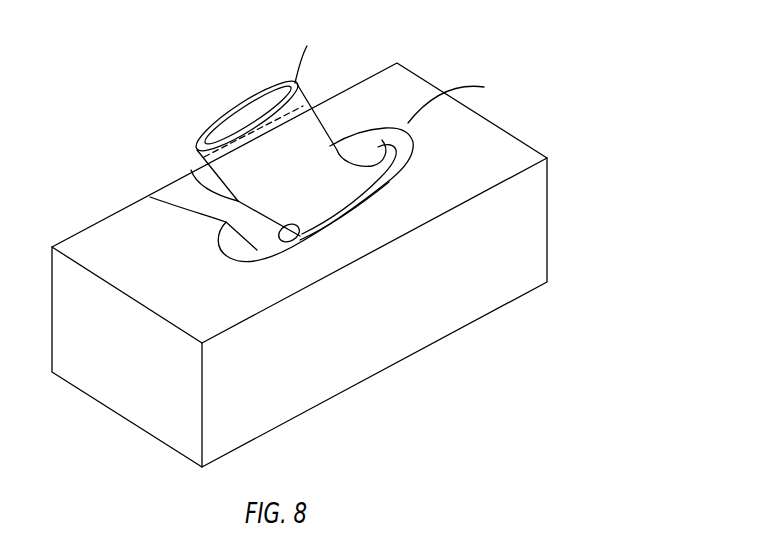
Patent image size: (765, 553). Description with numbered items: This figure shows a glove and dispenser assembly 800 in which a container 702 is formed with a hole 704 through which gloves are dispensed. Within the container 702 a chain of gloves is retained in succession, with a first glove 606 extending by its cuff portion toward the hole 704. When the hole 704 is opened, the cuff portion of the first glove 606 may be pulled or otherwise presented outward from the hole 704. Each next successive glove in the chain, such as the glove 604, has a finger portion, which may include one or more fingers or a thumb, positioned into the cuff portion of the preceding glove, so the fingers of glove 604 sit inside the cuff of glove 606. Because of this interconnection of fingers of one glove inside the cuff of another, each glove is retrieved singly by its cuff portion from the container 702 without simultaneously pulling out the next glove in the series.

The glove and dispenser assembly 800 is at (549, 59).
The container 702 is at (529, 153).
The hole 704 is at (150, 197).
The glove 604 is at (414, 134).
The first glove 606 is at (224, 191).